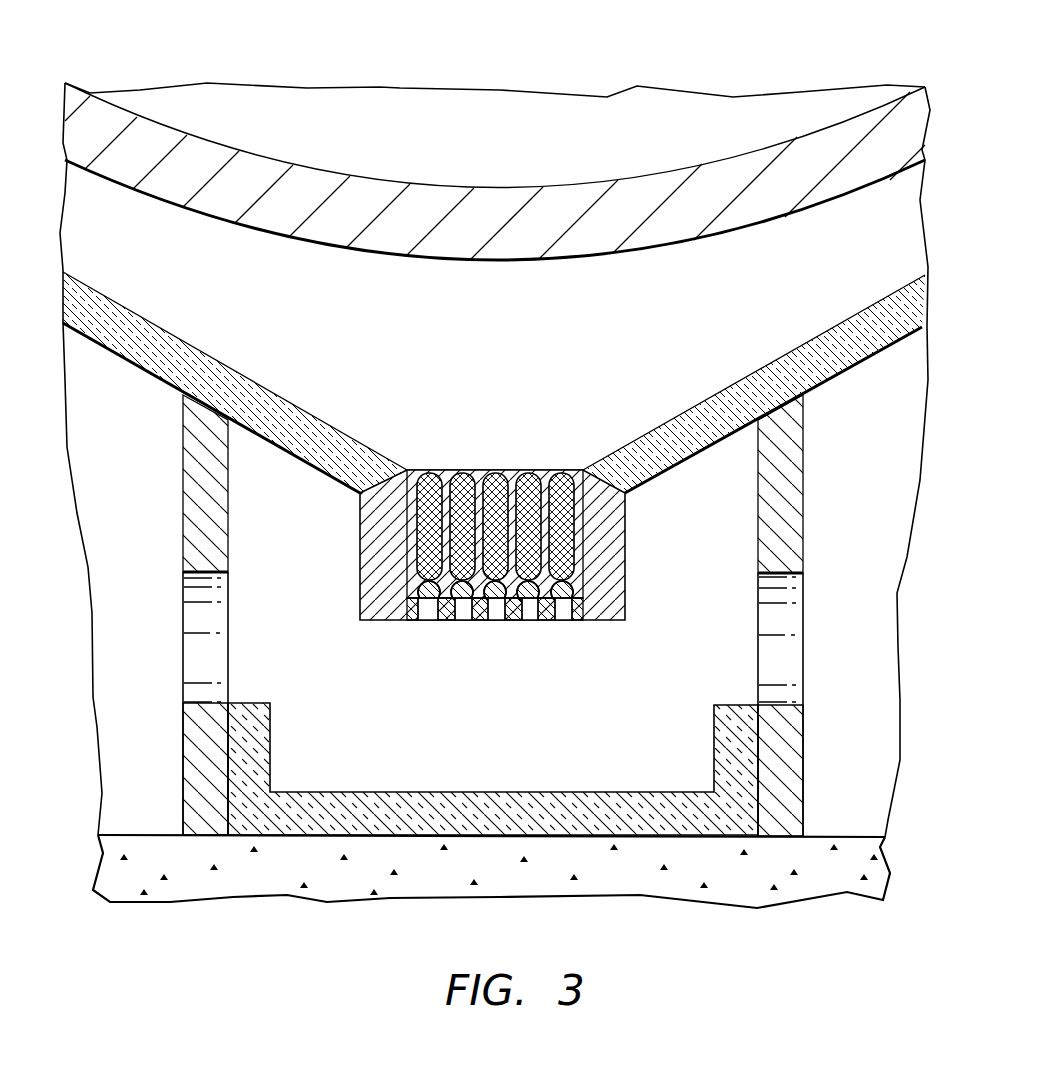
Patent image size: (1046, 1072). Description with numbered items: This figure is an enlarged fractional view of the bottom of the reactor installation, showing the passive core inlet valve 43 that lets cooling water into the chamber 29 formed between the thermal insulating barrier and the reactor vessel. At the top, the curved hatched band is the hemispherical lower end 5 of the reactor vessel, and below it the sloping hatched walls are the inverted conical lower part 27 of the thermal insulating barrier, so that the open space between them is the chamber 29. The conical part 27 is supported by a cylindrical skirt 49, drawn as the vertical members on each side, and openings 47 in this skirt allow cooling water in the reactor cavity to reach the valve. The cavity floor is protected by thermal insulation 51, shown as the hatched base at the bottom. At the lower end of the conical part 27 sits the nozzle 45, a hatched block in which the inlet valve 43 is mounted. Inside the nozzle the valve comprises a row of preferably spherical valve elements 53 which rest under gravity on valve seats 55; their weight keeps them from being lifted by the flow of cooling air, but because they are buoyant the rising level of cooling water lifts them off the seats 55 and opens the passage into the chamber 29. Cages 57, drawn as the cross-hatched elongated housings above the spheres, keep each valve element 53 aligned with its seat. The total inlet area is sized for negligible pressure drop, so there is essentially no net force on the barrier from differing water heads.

The hemispherical lower end 5 is at (659, 250).
The inverted conical lower part 27 is at (117, 368).
The chamber 29 is at (263, 270).
The core inlet valve 43 is at (496, 532).
The nozzle 45 is at (360, 564).
The openings 47 is at (778, 703).
The cylindrical skirt 49 is at (805, 486).
The thermal insulation 51 is at (312, 792).
The valve elements 53 is at (527, 621).
The valve seats 55 is at (572, 621).
The cages 57 is at (498, 475).